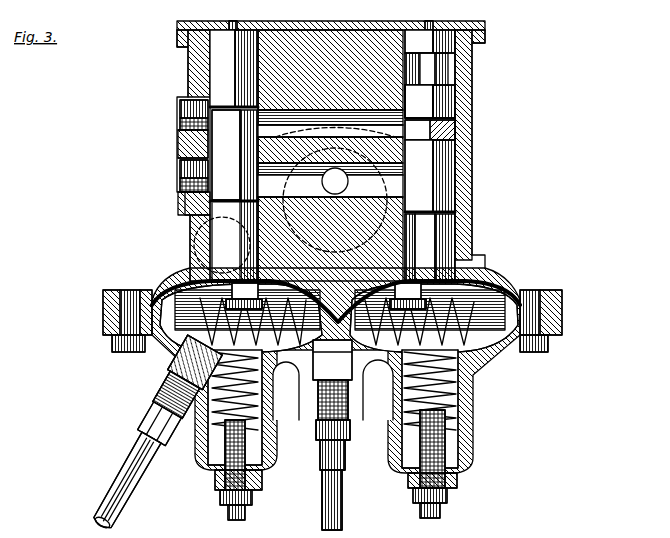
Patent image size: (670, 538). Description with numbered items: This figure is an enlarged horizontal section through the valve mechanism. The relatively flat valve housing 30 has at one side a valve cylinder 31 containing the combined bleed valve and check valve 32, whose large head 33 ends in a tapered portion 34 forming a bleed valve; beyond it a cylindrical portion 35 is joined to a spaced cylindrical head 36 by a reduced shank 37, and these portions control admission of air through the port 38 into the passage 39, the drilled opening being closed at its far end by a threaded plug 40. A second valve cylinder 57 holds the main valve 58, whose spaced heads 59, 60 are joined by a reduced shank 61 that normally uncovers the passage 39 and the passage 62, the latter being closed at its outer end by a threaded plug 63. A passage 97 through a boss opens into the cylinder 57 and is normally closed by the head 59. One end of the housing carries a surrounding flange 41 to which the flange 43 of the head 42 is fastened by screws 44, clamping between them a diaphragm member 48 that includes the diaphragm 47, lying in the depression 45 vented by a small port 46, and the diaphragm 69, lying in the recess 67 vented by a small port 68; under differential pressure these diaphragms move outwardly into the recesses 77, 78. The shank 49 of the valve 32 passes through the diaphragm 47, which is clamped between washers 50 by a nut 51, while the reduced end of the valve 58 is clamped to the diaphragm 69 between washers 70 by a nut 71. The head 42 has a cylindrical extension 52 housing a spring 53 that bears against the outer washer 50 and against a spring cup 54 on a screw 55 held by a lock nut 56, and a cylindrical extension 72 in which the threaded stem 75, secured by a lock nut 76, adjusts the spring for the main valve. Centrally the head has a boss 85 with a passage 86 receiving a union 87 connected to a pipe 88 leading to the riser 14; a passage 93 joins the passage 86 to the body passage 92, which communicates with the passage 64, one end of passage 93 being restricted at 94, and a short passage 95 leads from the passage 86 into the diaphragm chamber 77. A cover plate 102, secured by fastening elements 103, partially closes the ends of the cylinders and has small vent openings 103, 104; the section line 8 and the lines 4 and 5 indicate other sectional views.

The cover plate 102 is at (486, 26).
The opening 104 is at (233, 22).
The fastening elements 103 is at (436, 16).
The section line 8 is at (339, 15).
The valve housing 30 is at (174, 73).
The head 60 is at (222, 50).
The threaded plug 40 is at (183, 110).
The valve cylinder 57 is at (185, 143).
The threaded plug 63 is at (182, 185).
The reduced shank 61 is at (234, 195).
The main valve 58 is at (210, 220).
The passage 97 is at (198, 233).
The head 59 is at (204, 250).
The port 68 is at (190, 268).
The section line 5- 5 is at (170, 172).
The section line 4- 4 is at (175, 240).
The passage 39 is at (360, 133).
The passage 62 is at (330, 214).
The passage 64 is at (335, 181).
The cylindrical head 36 is at (445, 48).
The reduced shank 37 is at (432, 72).
The cylindrical portion 35 is at (445, 100).
The port 38 is at (455, 118).
The tapered portion 34 is at (450, 132).
The combined bleed valve and check valve 32 is at (425, 176).
The passage 92 is at (417, 195).
The head 33 is at (455, 200).
The valve cylinder 31 is at (448, 228).
The shank 49 is at (440, 250).
The port 46 is at (472, 248).
The depression 45 is at (485, 262).
The recess 67 is at (160, 288).
The diaphragm 69 is at (241, 318).
The washers 70 is at (262, 300).
The nut 71 is at (252, 320).
The nut 51 is at (455, 330).
The washers 50 is at (425, 300).
The diaphragm 47 is at (505, 290).
The recess 78 is at (146, 350).
The flange 41 is at (562, 295).
The diaphragm member 48 is at (560, 308).
The flange 43 is at (560, 328).
The screws 44 is at (540, 352).
The recess 77 is at (505, 350).
The restricted portion 94 is at (286, 391).
The short passage 95 is at (378, 390).
The passage 93 is at (330, 330).
The passage 86 is at (349, 380).
The boss 85 is at (350, 433).
The union 87 is at (345, 462).
The pipe 88 is at (322, 500).
The cylindrical extension 72 is at (205, 470).
The riser 14 is at (250, 445).
The threaded stem 75 is at (220, 498).
The lock nut 76 is at (258, 512).
The head 42 is at (466, 408).
The spring 53 is at (458, 385).
The cylindrical extension 52 is at (445, 425).
The spring cup 54 is at (445, 445).
The screw 55 is at (457, 480).
The lock nut 56 is at (447, 496).